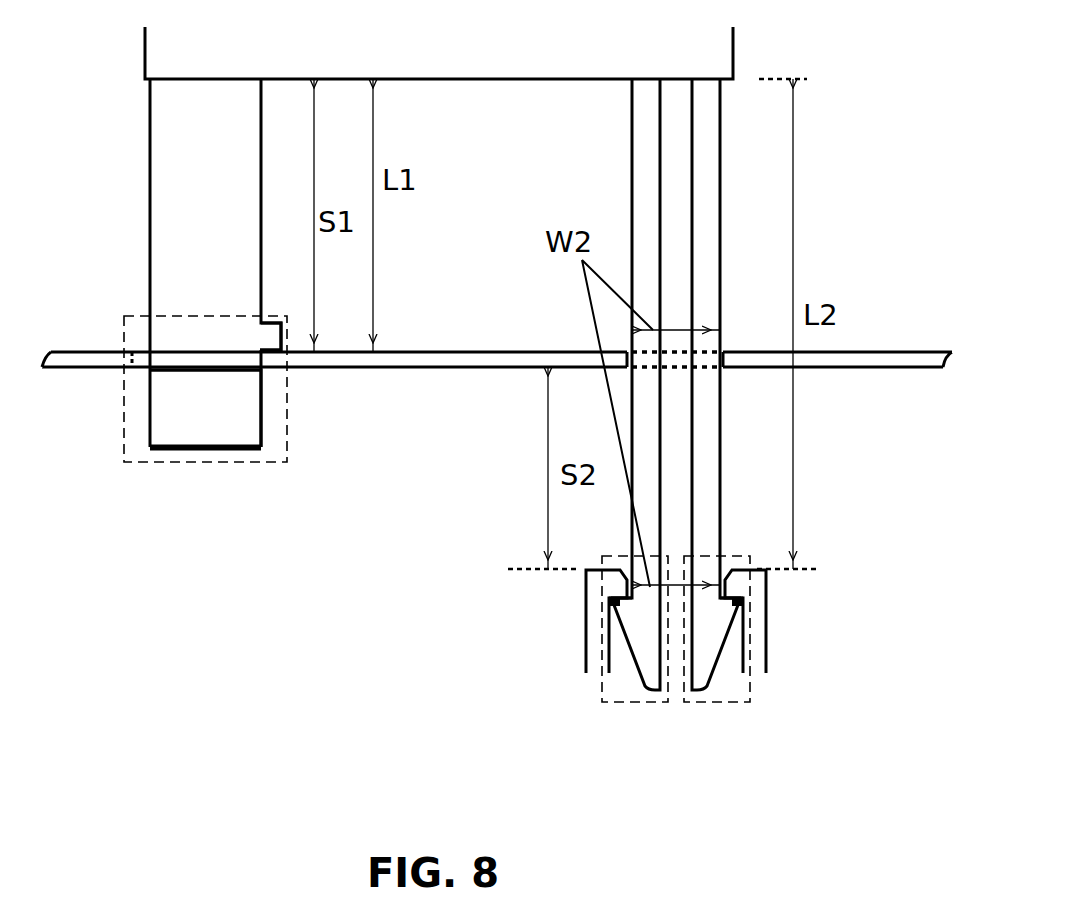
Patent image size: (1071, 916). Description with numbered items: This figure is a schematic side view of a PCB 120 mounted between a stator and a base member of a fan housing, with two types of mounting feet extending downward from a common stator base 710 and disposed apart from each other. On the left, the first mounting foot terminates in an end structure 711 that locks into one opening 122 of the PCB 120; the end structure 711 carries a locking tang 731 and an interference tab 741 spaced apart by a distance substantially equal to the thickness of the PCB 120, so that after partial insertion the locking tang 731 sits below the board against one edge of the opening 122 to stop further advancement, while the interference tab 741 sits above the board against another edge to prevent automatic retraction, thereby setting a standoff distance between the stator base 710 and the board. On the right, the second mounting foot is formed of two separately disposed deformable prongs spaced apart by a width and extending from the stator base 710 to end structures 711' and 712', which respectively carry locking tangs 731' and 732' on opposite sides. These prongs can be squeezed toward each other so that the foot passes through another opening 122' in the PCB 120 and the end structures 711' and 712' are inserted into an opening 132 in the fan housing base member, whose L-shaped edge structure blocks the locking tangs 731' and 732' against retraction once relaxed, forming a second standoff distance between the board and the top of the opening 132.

The stator base 710 is at (439, 53).
The end structure 711 is at (165, 279).
The interference tab 741 is at (280, 343).
The locking tang 731 is at (251, 424).
The PCB 120 is at (498, 362).
The opening 122 is at (100, 321).
The opening 122' is at (711, 316).
The end structure 711' is at (600, 419).
The end structure 712' is at (776, 408).
The locking tang 731' is at (569, 640).
The locking tang 732' is at (791, 628).
The opening 132 is at (595, 597).